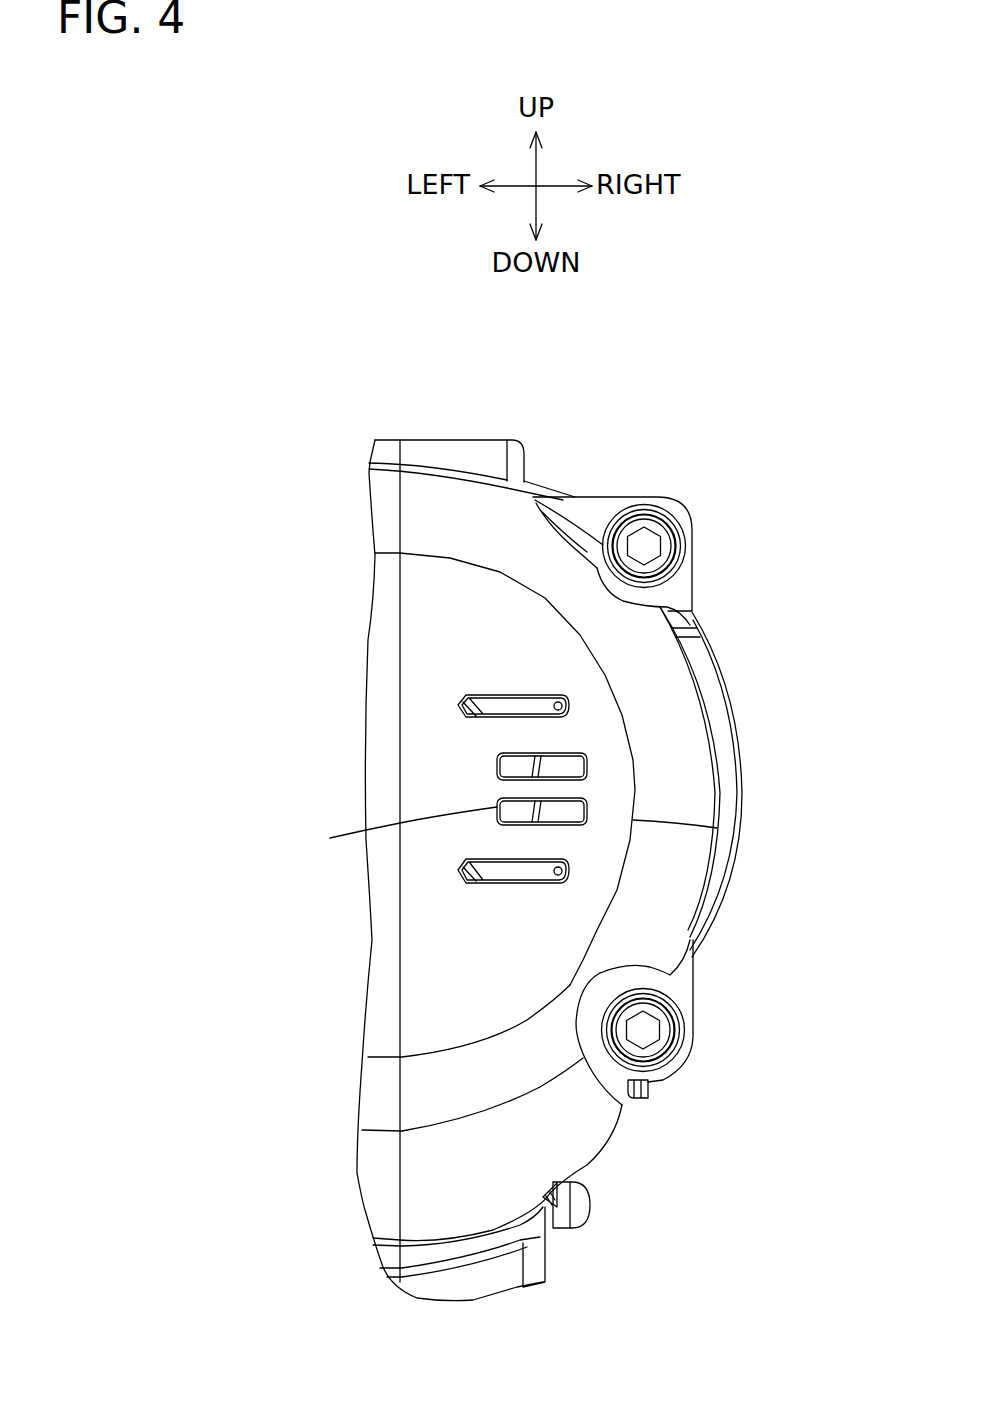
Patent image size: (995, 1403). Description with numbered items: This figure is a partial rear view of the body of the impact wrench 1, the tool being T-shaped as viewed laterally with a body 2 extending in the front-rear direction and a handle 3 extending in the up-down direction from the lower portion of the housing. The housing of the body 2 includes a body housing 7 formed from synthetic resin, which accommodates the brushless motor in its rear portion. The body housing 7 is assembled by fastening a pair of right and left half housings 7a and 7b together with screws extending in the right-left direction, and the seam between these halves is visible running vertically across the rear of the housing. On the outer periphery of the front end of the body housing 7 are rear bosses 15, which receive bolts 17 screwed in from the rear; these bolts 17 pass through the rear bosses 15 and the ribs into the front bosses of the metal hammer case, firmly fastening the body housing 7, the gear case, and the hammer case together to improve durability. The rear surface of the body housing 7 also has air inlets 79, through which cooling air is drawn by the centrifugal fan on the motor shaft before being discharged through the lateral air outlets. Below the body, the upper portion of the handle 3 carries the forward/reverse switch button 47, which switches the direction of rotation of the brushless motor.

The impact wrench 1 is at (636, 418).
The body 2 is at (560, 470).
The handle 3 is at (508, 1283).
The body housing 7 is at (498, 436).
The half housing 7a is at (380, 512).
The half housing 7b is at (430, 480).
The rear boss 15 is at (612, 505).
The bolt 17 is at (650, 546).
The forward/reverse switch button 47 is at (580, 1205).
The air inlet 79 is at (458, 702).